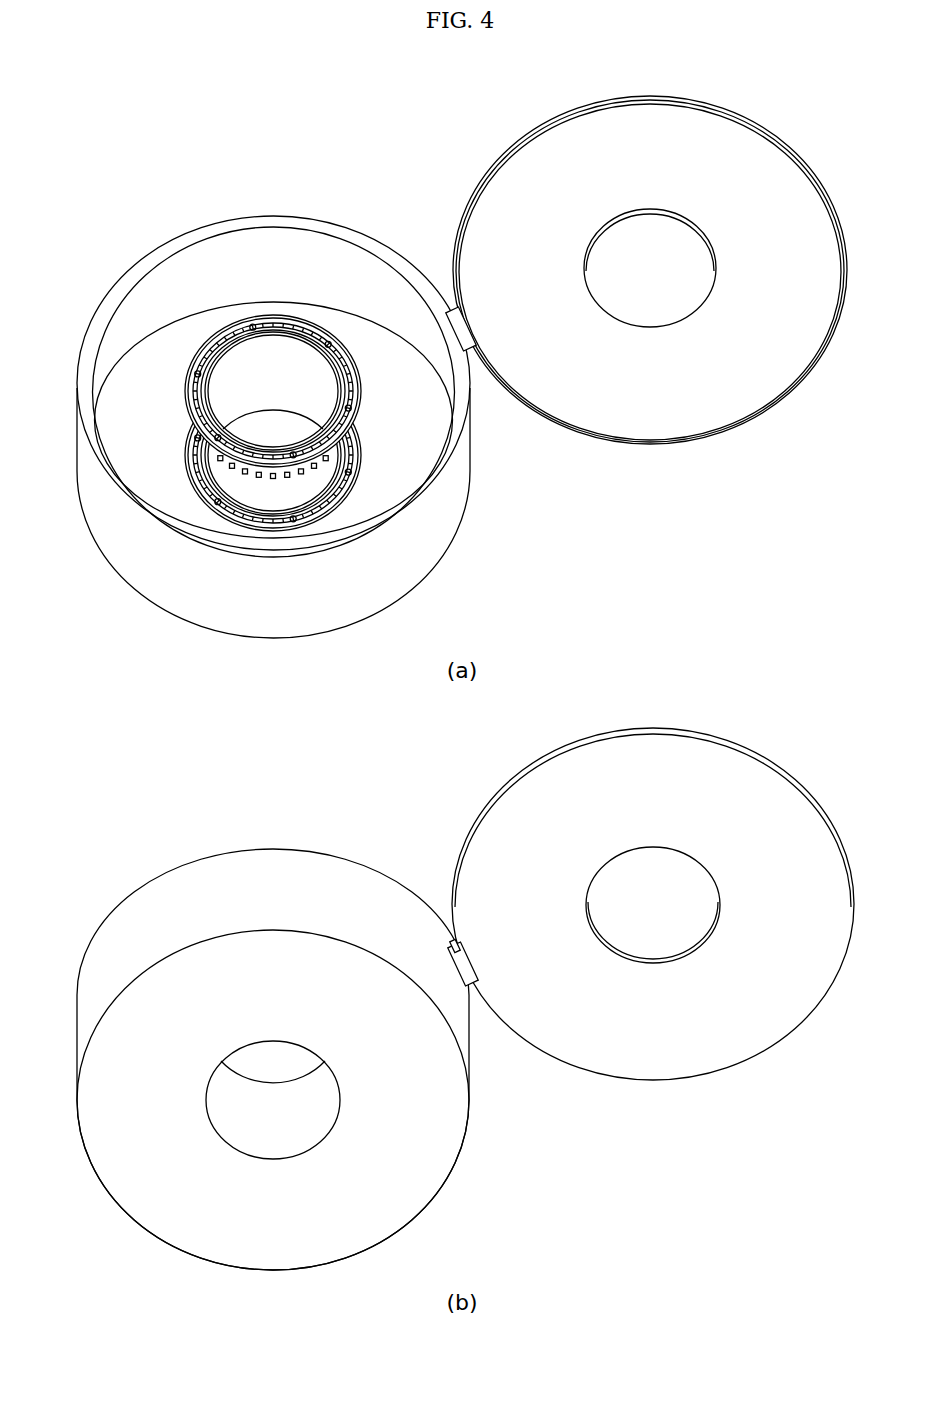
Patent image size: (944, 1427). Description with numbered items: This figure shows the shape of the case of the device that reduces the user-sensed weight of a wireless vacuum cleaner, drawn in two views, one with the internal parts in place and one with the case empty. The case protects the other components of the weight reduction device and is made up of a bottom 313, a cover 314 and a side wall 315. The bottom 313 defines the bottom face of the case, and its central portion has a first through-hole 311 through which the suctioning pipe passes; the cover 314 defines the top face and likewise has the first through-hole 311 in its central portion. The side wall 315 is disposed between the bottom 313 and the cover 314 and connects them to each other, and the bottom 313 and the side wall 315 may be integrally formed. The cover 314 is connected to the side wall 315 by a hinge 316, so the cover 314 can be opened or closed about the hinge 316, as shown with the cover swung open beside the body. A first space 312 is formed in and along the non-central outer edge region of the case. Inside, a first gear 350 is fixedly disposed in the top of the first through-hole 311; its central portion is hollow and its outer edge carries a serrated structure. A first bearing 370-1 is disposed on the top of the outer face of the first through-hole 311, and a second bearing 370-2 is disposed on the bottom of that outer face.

The first through-hole 311 is at (246, 360).
The first space 312 is at (155, 383).
The bottom 313 is at (198, 1222).
The cover 314 is at (565, 163).
The side wall 315 is at (143, 570).
The hinge 316 is at (452, 308).
The first gear 350 is at (332, 448).
The first bearing 370-1 is at (275, 318).
The second bearing 370-2 is at (330, 510).